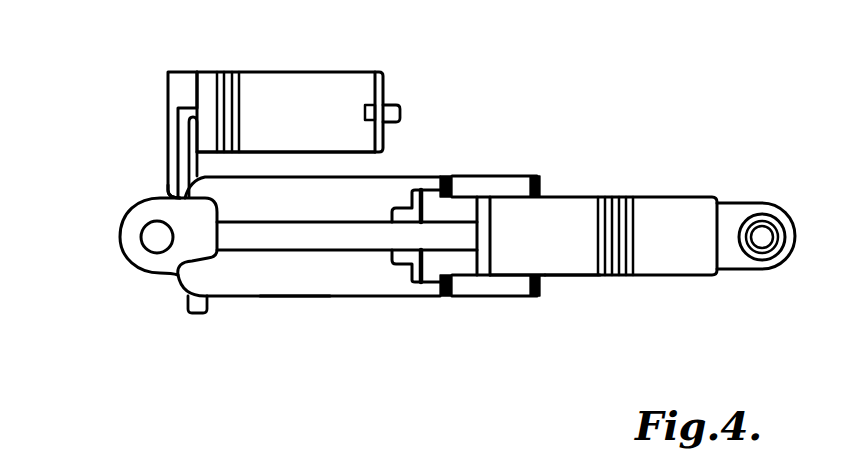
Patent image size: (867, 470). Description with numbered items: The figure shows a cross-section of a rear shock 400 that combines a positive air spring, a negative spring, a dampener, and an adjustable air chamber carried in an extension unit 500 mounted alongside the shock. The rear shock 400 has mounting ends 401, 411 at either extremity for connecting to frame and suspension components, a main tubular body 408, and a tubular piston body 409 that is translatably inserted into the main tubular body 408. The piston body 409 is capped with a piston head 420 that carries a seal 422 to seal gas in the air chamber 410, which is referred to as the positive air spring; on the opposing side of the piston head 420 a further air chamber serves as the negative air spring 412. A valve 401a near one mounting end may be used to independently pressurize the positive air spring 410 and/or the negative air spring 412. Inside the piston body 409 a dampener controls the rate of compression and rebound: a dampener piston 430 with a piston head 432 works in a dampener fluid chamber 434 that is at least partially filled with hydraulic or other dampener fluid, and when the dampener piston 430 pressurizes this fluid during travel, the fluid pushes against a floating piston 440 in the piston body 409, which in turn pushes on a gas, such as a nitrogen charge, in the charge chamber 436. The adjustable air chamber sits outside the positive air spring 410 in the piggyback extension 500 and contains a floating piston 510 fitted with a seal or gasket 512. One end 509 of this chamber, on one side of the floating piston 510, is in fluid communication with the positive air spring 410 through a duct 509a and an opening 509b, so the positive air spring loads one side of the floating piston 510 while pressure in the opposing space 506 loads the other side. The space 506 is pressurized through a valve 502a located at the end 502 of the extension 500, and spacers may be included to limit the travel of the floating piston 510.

The rear shock 400 is at (545, 92).
The extension unit 500 is at (388, 72).
The end of the extension 502 is at (380, 72).
The valve 502a is at (400, 108).
The opposing end of the adjustable air chamber 506 is at (323, 124).
The end of chamber 509 is at (207, 100).
The duct 509a is at (180, 158).
The opening 509b is at (170, 196).
The floating piston 510 is at (224, 72).
The seal or gasket 512 is at (230, 153).
The mounting end 401 is at (130, 240).
The valve 401a is at (203, 313).
The main tubular body 408 is at (350, 297).
The tubular piston body 409 is at (582, 196).
The air chamber 410 is at (277, 277).
The mounting end 411 is at (762, 240).
The negative air spring 412 is at (508, 284).
The piston head 420 is at (405, 297).
The seal 422 is at (447, 177).
The dampener piston 430 is at (258, 238).
The piston head 432 is at (487, 238).
The dampener fluid chamber 434 is at (578, 264).
The charge chamber 436 is at (685, 267).
The floating piston 440 is at (630, 197).